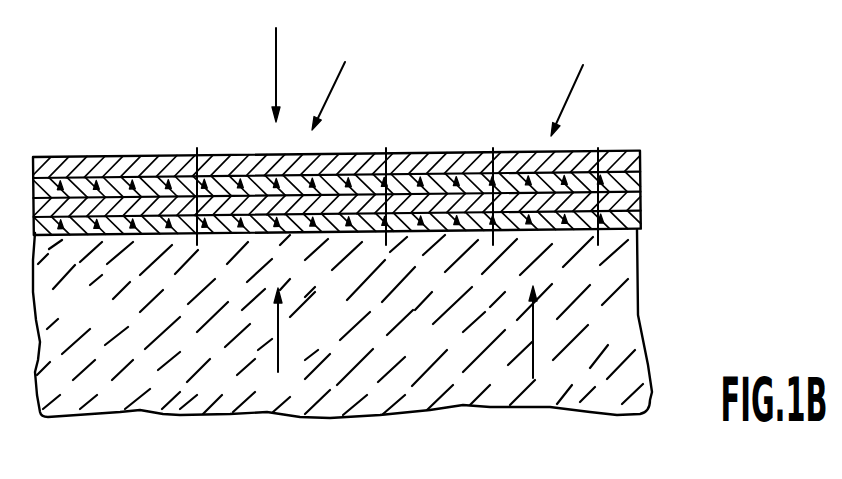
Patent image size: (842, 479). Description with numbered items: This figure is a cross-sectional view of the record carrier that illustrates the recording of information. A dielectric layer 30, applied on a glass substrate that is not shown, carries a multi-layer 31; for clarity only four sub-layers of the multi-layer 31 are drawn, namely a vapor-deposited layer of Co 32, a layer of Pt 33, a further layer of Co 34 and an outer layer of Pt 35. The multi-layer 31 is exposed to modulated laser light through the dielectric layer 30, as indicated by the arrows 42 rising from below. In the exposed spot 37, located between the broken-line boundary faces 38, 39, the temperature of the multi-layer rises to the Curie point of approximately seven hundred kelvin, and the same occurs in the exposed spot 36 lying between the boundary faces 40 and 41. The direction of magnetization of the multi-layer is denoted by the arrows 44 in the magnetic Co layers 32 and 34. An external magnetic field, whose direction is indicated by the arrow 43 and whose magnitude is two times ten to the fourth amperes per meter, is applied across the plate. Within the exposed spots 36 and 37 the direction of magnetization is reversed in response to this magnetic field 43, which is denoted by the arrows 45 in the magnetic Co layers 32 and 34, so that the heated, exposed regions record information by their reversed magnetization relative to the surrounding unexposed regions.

The dielectric layer 30 is at (620, 306).
The multi-layer 31 is at (713, 138).
The Co layer 32 is at (637, 219).
The Pt layer 33 is at (632, 203).
The Co layer 34 is at (632, 183).
The Pt layer 35 is at (642, 153).
The exposed spot 36 is at (576, 87).
The exposed spot 37 is at (338, 83).
The boundary face 38 is at (197, 146).
The boundary face 39 is at (386, 146).
The boundary face 40 is at (494, 146).
The boundary face 41 is at (600, 144).
The arrows 42 is at (278, 372).
The arrow 43 is at (277, 52).
The arrows 44 is at (108, 185).
The arrows 45 is at (331, 185).